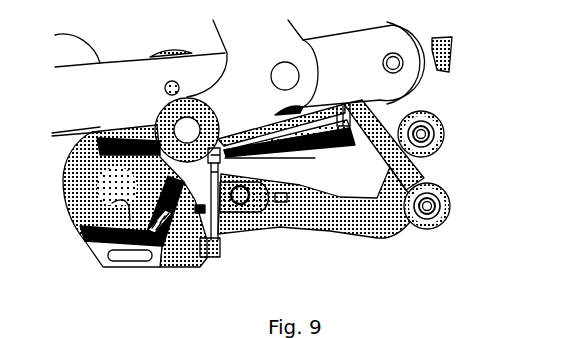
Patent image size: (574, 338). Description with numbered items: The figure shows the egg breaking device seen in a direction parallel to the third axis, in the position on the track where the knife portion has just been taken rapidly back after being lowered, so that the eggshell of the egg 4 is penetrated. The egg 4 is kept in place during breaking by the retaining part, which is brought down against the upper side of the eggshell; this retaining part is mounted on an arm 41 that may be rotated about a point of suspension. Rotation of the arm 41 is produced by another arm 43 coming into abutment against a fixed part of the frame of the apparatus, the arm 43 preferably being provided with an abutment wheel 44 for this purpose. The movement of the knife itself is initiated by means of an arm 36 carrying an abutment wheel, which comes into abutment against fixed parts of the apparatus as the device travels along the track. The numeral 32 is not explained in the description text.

The egg 4 is at (130, 243).
The roller 32 is at (435, 127).
The arm 36 is at (313, 218).
The arm 41 is at (314, 155).
The arm 43 is at (413, 158).
The abutment wheel 44 is at (443, 203).